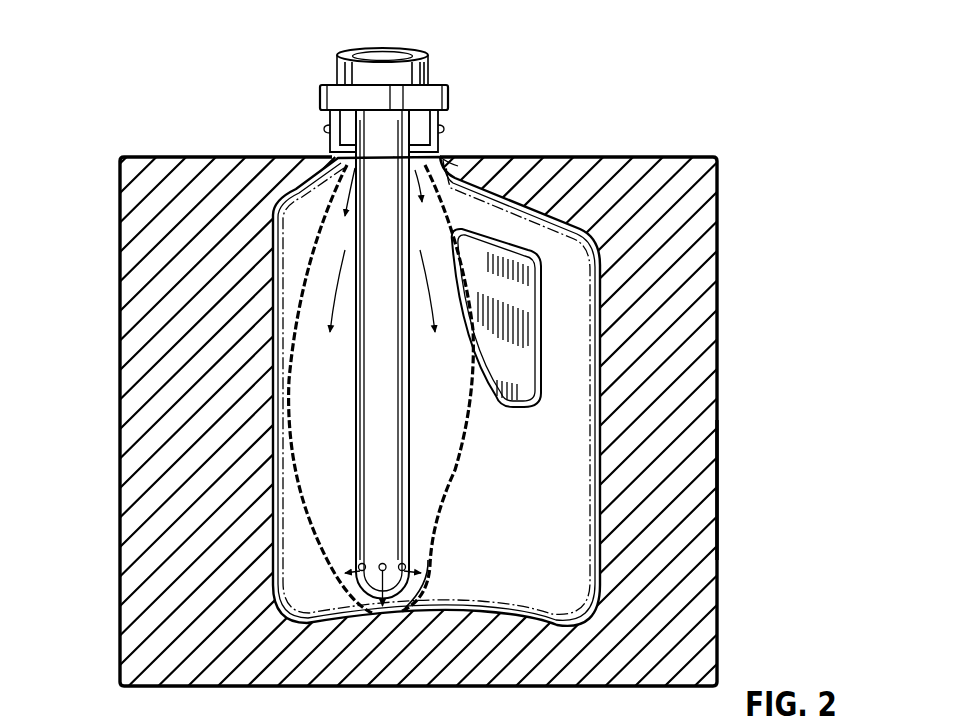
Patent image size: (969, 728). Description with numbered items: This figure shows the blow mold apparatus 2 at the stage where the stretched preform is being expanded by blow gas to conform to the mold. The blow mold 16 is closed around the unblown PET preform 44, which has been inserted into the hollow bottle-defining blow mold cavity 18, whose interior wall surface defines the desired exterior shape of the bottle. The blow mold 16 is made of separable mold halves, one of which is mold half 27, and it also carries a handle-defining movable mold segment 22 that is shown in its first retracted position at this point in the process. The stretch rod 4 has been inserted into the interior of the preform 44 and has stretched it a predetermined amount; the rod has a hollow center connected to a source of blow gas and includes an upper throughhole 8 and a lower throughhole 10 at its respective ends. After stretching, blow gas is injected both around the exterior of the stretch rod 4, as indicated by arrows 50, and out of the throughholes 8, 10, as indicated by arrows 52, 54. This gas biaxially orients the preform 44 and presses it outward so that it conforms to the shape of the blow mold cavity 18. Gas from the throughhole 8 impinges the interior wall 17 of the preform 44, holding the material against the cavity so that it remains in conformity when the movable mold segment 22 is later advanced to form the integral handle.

The blow mold apparatus 2 is at (745, 106).
The stretch rod 4 is at (410, 388).
The throughhole 8 is at (424, 200).
The throughhole 10 is at (381, 563).
The blow mold 16 is at (720, 375).
The interior wall 17 is at (520, 236).
The blow mold cavity 18 is at (548, 536).
The movable mold segment 22 is at (517, 411).
The mold half 27 is at (706, 504).
The PET preform 44 is at (452, 487).
The arrows 50 is at (352, 190).
The arrows 52 is at (433, 182).
The arrows 54 is at (431, 557).